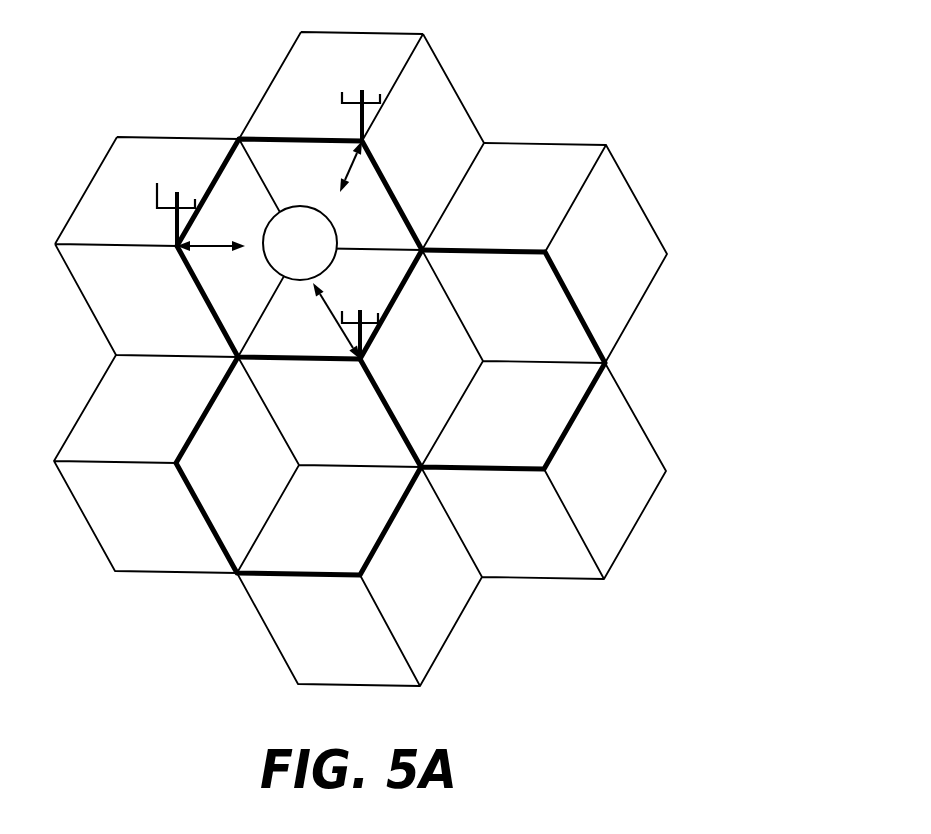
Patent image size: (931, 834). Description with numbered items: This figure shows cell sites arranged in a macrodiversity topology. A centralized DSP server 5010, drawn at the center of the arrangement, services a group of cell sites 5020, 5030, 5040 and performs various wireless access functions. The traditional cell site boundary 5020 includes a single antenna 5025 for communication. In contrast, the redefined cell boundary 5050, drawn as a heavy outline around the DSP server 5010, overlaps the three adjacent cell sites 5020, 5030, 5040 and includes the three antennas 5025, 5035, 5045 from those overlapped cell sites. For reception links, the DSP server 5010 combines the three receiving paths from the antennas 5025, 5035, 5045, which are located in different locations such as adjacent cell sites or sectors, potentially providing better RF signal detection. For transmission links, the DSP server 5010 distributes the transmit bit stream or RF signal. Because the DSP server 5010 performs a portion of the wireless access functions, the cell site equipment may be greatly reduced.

The centralized DSP server 5010 is at (293, 281).
The traditional cell site boundary 5020 is at (453, 88).
The single antenna 5025 is at (342, 93).
The cell site 5030 is at (73, 205).
The antenna 5035 is at (157, 183).
The cell site 5040 is at (468, 333).
The antenna 5045 is at (342, 311).
The redefined cell boundary 5050 is at (398, 206).